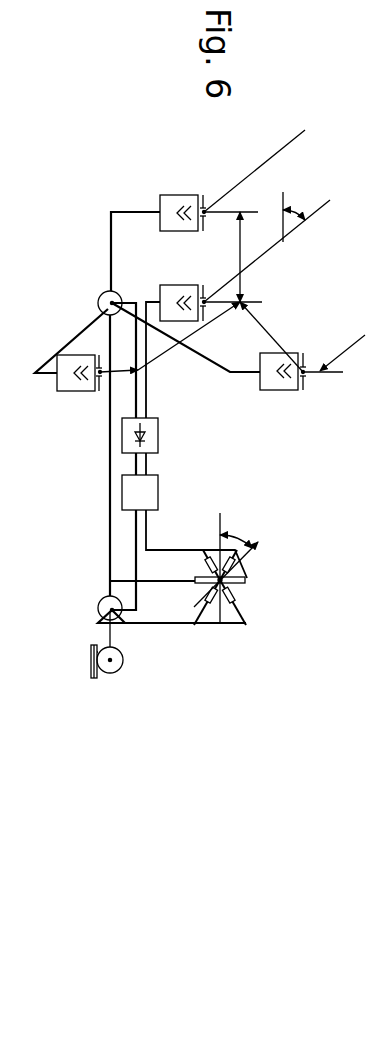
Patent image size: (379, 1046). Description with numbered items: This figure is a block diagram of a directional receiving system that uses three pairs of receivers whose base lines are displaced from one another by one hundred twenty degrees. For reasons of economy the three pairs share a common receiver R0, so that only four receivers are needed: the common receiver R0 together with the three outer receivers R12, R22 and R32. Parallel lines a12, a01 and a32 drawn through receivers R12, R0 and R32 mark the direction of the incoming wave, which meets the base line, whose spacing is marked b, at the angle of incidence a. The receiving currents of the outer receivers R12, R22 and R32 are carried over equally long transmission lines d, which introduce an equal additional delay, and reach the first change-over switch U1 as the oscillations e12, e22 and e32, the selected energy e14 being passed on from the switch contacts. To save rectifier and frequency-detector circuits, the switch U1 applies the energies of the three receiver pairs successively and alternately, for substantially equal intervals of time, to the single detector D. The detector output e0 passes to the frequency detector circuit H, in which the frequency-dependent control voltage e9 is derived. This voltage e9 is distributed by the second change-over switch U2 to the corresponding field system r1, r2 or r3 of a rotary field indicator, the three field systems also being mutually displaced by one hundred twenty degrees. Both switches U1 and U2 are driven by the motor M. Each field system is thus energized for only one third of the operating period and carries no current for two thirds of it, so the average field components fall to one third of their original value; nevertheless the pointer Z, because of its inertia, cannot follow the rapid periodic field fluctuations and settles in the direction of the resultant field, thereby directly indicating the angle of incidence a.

The outer receiver R12 is at (183, 195).
The common receiver R0 is at (183, 285).
The outer receiver R22 is at (66, 392).
The outer receiver R32 is at (274, 391).
The first change-over switch U1 is at (102, 294).
The second change-over switch U2 is at (101, 601).
The detector D is at (158, 435).
The frequency detector circuit H is at (158, 492).
The motor M is at (119, 670).
The pointer Z is at (260, 546).
The field system r1 is at (203, 601).
The field system r2 is at (240, 596).
The field system r3 is at (243, 608).
The signal e12 is at (105, 246).
The signal e22 is at (48, 344).
The signal e32 is at (226, 381).
The signal e14 is at (100, 369).
The detector output voltage e0 is at (158, 470).
The frequency-dependent control voltage e9 is at (137, 548).
The transmission line d is at (112, 251).
The distance b is at (230, 292).
The angle of incidence a is at (295, 209).
The axis a12 is at (254, 171).
The axis a01 is at (267, 251).
The axis a32 is at (342, 353).